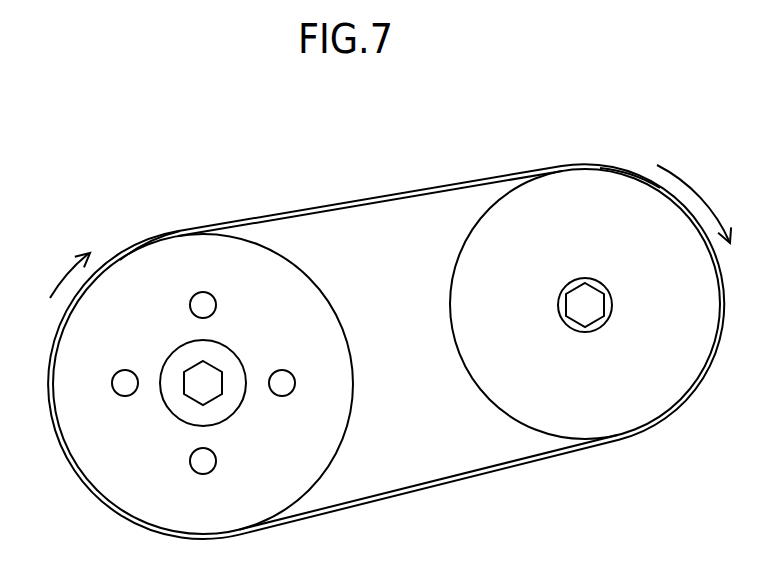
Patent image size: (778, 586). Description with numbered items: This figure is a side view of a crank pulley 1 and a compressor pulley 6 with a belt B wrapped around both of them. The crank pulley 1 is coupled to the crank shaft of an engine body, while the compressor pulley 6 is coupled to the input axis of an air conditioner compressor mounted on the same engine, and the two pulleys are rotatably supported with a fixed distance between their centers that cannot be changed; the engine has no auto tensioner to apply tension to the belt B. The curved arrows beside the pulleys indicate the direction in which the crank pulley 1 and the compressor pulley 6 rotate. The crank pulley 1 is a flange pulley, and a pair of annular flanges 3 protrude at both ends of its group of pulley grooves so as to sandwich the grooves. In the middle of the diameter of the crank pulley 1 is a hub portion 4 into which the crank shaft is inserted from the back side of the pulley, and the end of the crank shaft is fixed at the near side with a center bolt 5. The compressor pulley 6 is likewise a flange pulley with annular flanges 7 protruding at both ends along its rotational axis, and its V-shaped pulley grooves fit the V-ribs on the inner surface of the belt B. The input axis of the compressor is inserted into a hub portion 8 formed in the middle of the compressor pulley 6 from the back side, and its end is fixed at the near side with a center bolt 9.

The crank pulley 1 is at (124, 283).
The annular flange 3 is at (145, 237).
The belt B is at (370, 195).
The hub portion 4 is at (224, 358).
The center bolt 5 is at (203, 383).
The compressor pulley 6 is at (590, 192).
The annular flange 7 is at (630, 168).
The hub portion 8 is at (612, 305).
The center bolt 9 is at (592, 297).